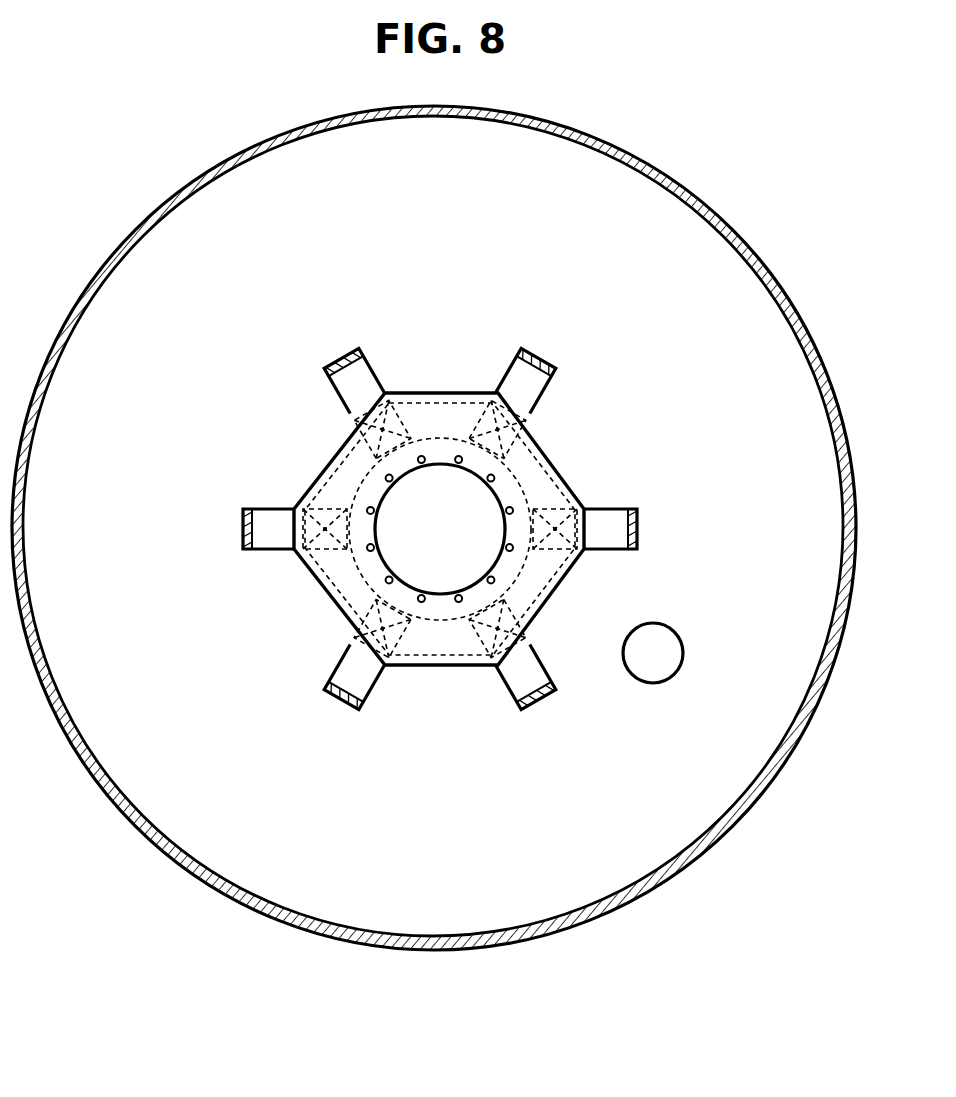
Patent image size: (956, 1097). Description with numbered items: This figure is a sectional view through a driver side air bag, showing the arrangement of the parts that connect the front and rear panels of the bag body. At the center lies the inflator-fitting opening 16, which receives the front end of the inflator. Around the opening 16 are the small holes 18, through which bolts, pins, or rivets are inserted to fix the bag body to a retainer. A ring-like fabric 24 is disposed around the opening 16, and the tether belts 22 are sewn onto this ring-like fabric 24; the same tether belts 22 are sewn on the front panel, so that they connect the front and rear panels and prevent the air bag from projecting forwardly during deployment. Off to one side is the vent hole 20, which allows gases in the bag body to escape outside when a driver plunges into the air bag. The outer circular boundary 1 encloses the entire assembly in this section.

The vessel shell 1 is at (710, 853).
The inflator-fitting opening 16 is at (485, 502).
The small holes 18 is at (385, 477).
The vent hole 20 is at (672, 656).
The tether belts 22 is at (345, 355).
The ring-like fabric 24 is at (542, 594).